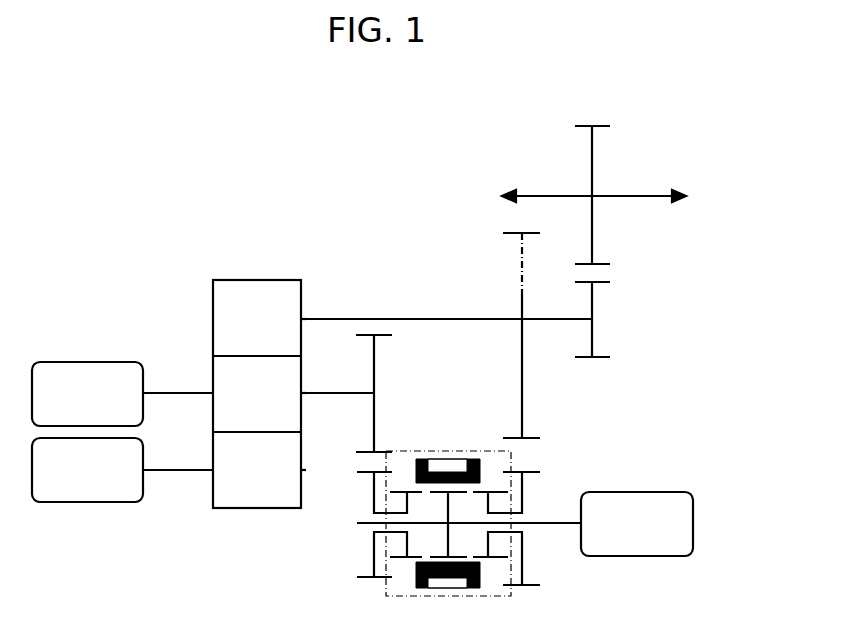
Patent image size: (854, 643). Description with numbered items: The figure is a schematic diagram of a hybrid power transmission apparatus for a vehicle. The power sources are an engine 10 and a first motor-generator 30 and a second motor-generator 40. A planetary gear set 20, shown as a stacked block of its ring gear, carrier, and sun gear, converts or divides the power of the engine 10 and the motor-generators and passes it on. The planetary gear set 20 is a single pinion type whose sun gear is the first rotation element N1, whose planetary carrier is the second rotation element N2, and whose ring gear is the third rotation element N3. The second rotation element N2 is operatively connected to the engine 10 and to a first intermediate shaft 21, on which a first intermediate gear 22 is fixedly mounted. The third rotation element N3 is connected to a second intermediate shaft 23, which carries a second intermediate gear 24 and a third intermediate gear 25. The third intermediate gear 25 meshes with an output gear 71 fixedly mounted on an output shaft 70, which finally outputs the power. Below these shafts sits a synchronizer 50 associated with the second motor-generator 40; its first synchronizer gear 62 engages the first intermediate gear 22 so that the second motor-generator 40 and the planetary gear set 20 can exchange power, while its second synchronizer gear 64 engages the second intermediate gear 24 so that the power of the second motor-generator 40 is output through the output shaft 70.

The engine 10 is at (85, 360).
The first motor-generator 30 is at (85, 504).
The second motor-generator 40 is at (695, 523).
The planetary gear set 20 is at (256, 279).
The first rotation element N1 is at (302, 468).
The second rotation element N2 is at (302, 372).
The third rotation element N3 is at (213, 317).
The first intermediate shaft 21 is at (352, 394).
The first intermediate gear 22 is at (376, 365).
The second intermediate shaft 23 is at (445, 315).
The second intermediate gear 24 is at (524, 389).
The third intermediate gear 25 is at (594, 300).
The synchronizer 50 is at (331, 556).
The first synchronizer gear 62 is at (372, 493).
The second synchronizer gear 64 is at (524, 489).
The output shaft 70 is at (635, 192).
The output gear 71 is at (590, 152).